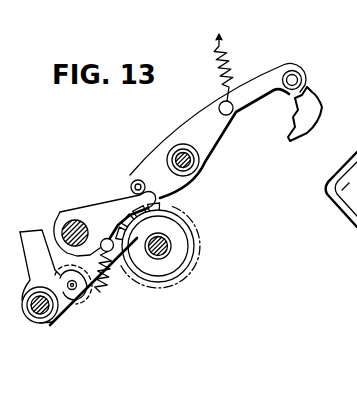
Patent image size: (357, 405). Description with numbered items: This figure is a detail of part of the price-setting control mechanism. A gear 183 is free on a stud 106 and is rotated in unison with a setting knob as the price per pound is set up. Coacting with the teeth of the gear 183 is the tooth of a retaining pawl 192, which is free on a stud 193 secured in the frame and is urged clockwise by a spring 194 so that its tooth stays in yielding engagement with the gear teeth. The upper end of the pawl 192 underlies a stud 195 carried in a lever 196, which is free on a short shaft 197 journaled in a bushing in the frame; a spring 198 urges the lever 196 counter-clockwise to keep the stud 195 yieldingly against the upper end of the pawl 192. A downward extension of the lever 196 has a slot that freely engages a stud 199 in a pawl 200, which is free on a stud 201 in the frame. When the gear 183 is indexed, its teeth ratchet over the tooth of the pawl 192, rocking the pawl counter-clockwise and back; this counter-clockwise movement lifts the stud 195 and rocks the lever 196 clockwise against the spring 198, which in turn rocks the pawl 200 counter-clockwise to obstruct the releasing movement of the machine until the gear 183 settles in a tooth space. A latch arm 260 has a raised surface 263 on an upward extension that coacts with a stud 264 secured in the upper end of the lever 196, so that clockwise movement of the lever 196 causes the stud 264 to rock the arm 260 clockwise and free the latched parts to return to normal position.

The stud 106 is at (172, 240).
The gear 183 is at (186, 258).
The retaining pawl 192 is at (113, 208).
The stud 193 is at (68, 220).
The spring 194 is at (100, 293).
The stud 195 is at (132, 180).
The lever 196 is at (195, 123).
The short shaft 197 is at (197, 159).
The spring 198 is at (227, 52).
The stud 199 is at (68, 306).
The pawl 200 is at (37, 266).
The stud 201 is at (35, 321).
The latch arm 260 is at (287, 123).
The raised surface 263 is at (307, 87).
The stud 264 is at (297, 63).